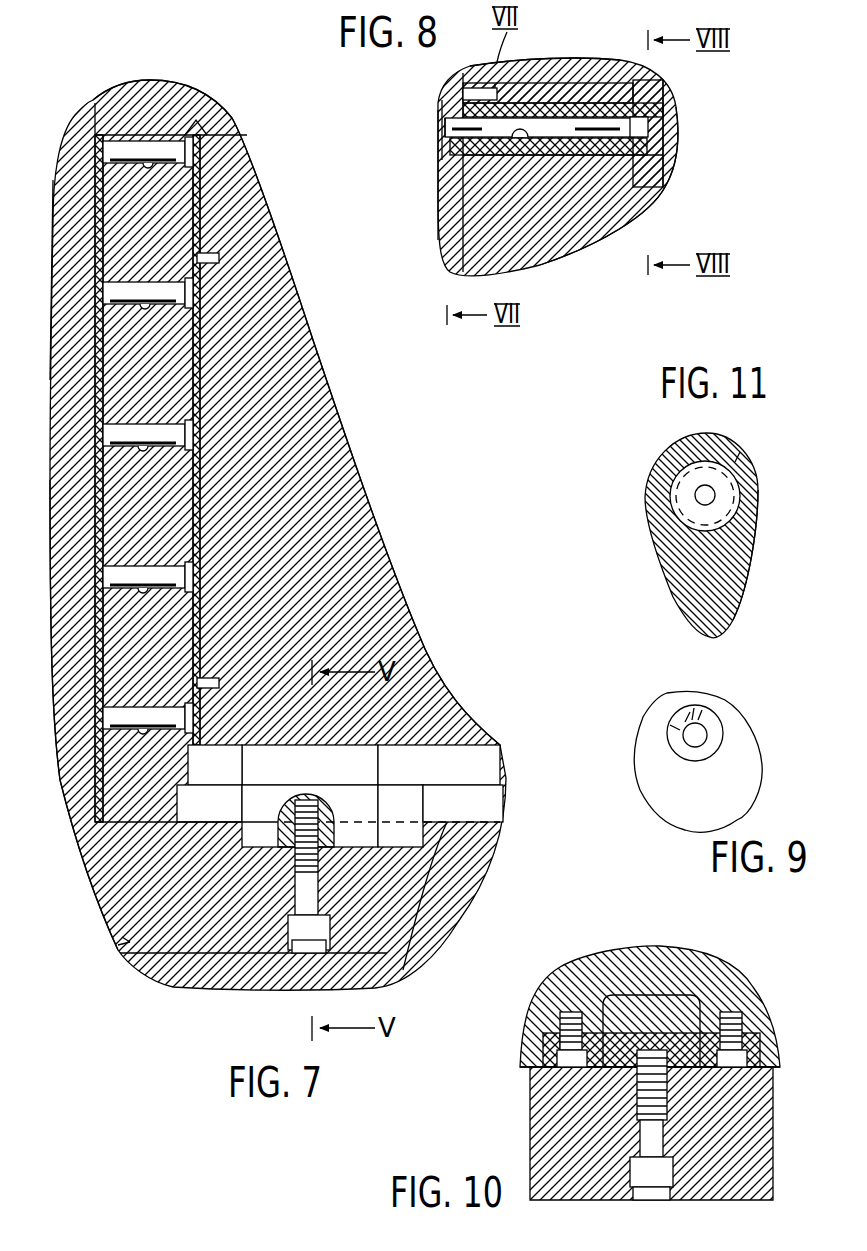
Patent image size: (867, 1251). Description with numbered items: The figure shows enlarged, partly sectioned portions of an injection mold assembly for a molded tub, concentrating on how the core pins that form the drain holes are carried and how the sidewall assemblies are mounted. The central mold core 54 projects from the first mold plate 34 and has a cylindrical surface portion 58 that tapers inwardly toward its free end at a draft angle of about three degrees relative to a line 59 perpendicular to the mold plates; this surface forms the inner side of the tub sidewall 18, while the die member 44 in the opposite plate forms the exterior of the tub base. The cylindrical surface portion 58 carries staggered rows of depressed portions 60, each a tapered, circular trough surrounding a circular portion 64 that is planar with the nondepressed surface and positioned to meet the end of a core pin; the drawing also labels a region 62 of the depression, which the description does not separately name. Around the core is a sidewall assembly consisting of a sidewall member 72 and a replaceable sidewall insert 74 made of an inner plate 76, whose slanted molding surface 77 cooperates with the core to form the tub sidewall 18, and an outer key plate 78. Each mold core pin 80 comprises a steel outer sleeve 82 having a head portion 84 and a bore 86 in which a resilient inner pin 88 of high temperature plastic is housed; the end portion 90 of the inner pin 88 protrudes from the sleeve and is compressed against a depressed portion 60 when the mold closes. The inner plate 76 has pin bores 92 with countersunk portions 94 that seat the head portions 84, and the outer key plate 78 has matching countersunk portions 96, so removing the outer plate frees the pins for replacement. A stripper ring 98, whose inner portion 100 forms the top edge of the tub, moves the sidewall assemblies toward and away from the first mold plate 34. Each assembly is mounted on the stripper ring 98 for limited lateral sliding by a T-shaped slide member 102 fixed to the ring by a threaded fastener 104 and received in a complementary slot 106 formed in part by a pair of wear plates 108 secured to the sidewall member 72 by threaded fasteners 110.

In FIG. 7, the sidewall 18 is at (95, 500).
In FIG. 8, the sidewall 18 is at (448, 254).
In FIG. 7, the first mold plate 34 is at (418, 945).
In FIG. 7, the die member 44 is at (185, 88).
In FIG. 8, the die member 44 is at (562, 65).
In FIG. 7, the mold core 54 is at (85, 322).
In FIG. 8, the mold core 54 is at (472, 76).
In FIG. 7, the cylindrical surface portion 58 is at (100, 190).
In FIG. 8, the cylindrical surface portion 58 is at (442, 131).
In FIG. 9, the cylindrical surface portion 58 is at (660, 805).
In FIG. 7, the line 59 is at (118, 86).
In FIG. 7, the depressed portion 60 is at (95, 161).
In FIG. 8, the depressed portion 60 is at (442, 150).
In FIG. 11, the depressed portion 60 is at (750, 548).
In FIG. 9, the depressed portion 60 is at (710, 718).
In FIG. 8, the wall portion 62 is at (450, 216).
In FIG. 11, the wall portion 62 is at (745, 572).
In FIG. 9, the wall portion 62 is at (718, 752).
In FIG. 8, the circular portion 64 is at (455, 102).
In FIG. 11, the circular portion 64 is at (745, 458).
In FIG. 9, the circular portion 64 is at (683, 735).
In FIG. 7, the sidewall member 72 is at (348, 504).
In FIG. 7, the sidewall insert 74 is at (205, 115).
In FIG. 7, the inner plate 76 is at (108, 636).
In FIG. 8, the inner plate 76 is at (552, 245).
In FIG. 7, the molding surface 77 is at (103, 226).
In FIG. 7, the outer key plate 78 is at (202, 612).
In FIG. 8, the outer key plate 78 is at (668, 185).
In FIG. 7, the mold core pin 80 is at (195, 143).
In FIG. 8, the mold core pin 80 is at (652, 105).
In FIG. 11, the mold core pin 80 is at (742, 480).
In FIG. 8, the outer sleeve 82 is at (575, 160).
In FIG. 8, the head portion 84 is at (658, 148).
In FIG. 8, the bore 86 is at (512, 150).
In FIG. 8, the inner pin 88 is at (603, 152).
In FIG. 11, the inner pin 88 is at (700, 488).
In FIG. 8, the end portion 90 is at (445, 122).
In FIG. 7, the pin bore 92 is at (150, 170).
In FIG. 7, the countersunk portion 94 is at (188, 165).
In FIG. 8, the countersunk portion 94 is at (632, 85).
In FIG. 7, the countersunk portion 96 is at (200, 300).
In FIG. 8, the countersunk portion 96 is at (642, 82).
In FIG. 7, the stripper ring 98 is at (115, 950).
In FIG. 7, the inner portion 100 is at (100, 822).
In FIG. 7, the slide member 102 is at (315, 750).
In FIG. 10, the slide member 102 is at (633, 995).
In FIG. 7, the threaded fastener 104 is at (320, 930).
In FIG. 10, the threaded fastener 104 is at (660, 1170).
In FIG. 7, the slot 106 is at (423, 750).
In FIG. 10, the slot 106 is at (668, 995).
In FIG. 7, the wear plate 108 is at (450, 822).
In FIG. 10, the wear plate 108 is at (760, 1040).
In FIG. 10, the threaded fastener 110 is at (572, 1062).